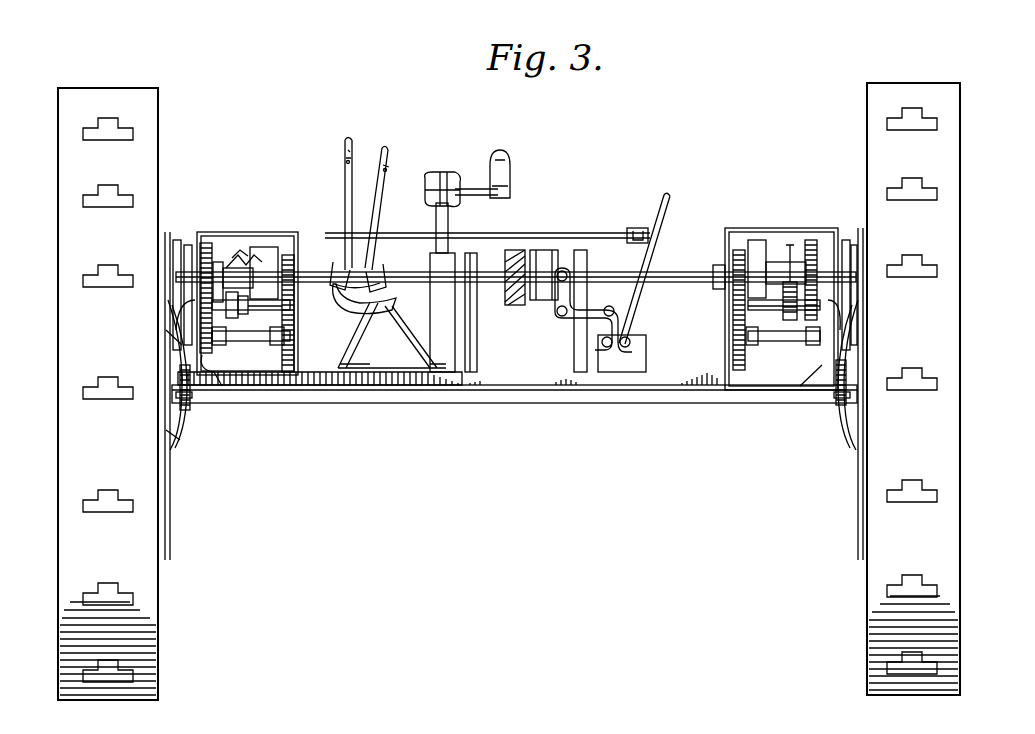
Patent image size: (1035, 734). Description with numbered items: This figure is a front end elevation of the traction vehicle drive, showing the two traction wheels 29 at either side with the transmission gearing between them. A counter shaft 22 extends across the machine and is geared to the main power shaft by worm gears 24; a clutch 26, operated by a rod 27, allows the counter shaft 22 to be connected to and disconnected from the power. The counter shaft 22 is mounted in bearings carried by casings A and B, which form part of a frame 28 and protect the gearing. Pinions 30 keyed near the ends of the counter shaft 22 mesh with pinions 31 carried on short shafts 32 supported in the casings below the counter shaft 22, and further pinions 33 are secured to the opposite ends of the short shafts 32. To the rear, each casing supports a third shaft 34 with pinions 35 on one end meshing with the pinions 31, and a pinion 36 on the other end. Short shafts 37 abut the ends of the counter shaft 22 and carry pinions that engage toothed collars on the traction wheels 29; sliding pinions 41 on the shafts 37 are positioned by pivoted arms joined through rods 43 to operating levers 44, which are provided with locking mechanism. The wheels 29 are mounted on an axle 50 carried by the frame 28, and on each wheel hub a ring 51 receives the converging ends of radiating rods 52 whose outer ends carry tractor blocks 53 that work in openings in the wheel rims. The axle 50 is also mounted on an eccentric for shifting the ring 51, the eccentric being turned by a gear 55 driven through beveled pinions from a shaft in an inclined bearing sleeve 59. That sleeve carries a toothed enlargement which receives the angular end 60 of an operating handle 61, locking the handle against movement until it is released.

The counter shaft 22 is at (611, 274).
The worm gears 24 is at (522, 250).
The clutch 26 is at (546, 262).
The rod 27 is at (667, 228).
The frame 28 is at (520, 387).
The traction wheels 29 is at (62, 397).
The pinions 30 is at (281, 240).
The pinions 31 is at (294, 350).
The short shafts 32 is at (225, 340).
The pinions 33 is at (212, 362).
The third shaft 34 is at (270, 312).
The pinions 35 is at (291, 297).
The pinion 36 is at (198, 318).
The short shafts 37 is at (246, 268).
The pinions 41 is at (205, 244).
The rods 43 is at (622, 233).
The operating levers 44 is at (356, 165).
The axle 50 is at (402, 388).
The ring 51 is at (183, 400).
The radiating rods 52 is at (173, 425).
The tractor blocks 53 is at (132, 594).
The gear 55 is at (186, 414).
The inclined bearing sleeve 59 is at (440, 224).
The angular end 60 is at (426, 186).
The operating handle 61 is at (468, 190).